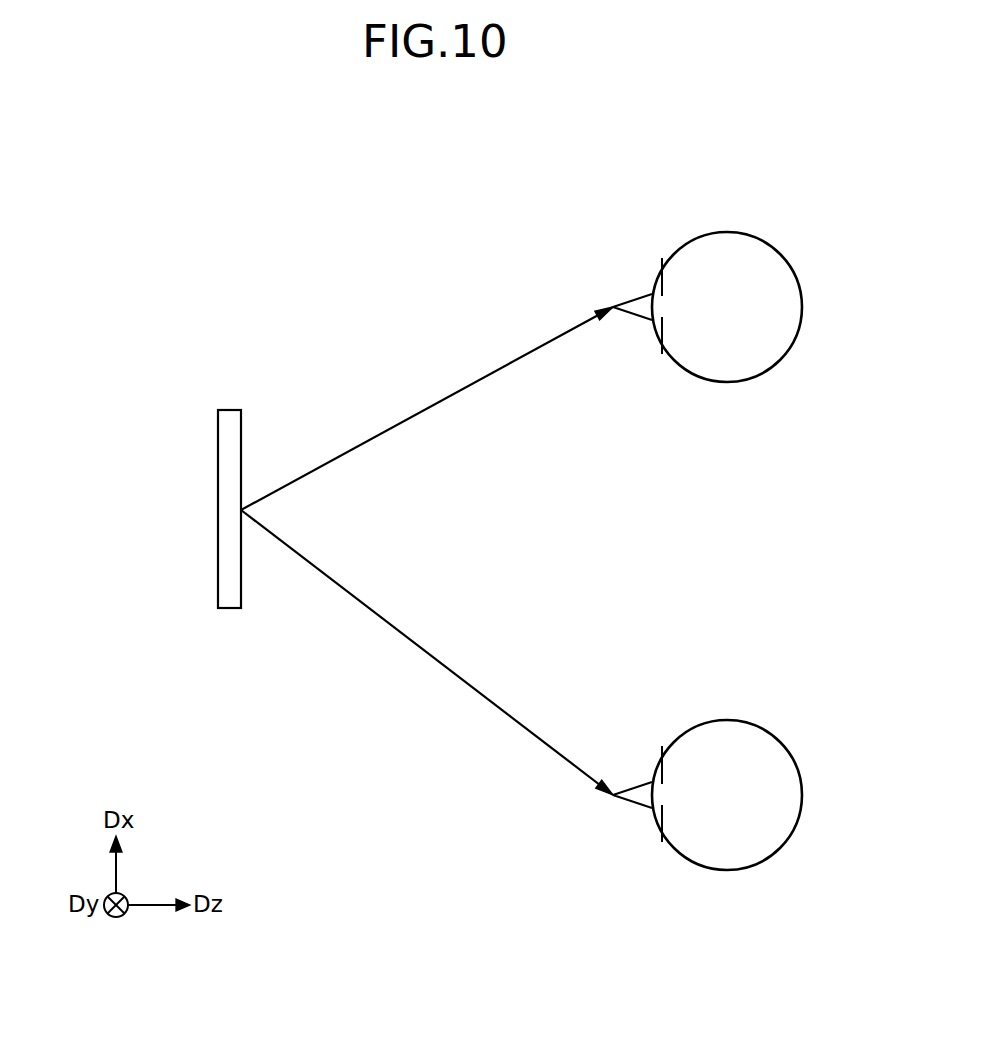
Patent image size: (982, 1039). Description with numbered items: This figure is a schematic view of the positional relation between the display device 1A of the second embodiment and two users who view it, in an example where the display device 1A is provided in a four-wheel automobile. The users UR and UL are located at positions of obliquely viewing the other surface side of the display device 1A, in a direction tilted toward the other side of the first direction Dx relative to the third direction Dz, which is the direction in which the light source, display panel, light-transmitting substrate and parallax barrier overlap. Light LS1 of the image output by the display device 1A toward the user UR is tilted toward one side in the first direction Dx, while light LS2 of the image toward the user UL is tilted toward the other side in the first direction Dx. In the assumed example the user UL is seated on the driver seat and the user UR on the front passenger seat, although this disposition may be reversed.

The display device 1A is at (231, 410).
The light of the image toward the user UR LS1 is at (421, 410).
The light of the image toward the user UL LS2 is at (422, 649).
The user UR is at (703, 205).
The user UL is at (706, 697).